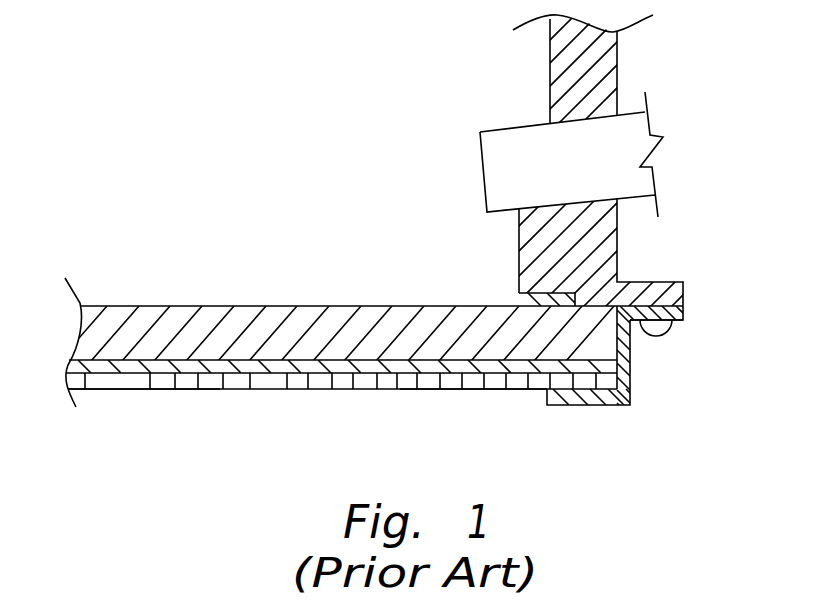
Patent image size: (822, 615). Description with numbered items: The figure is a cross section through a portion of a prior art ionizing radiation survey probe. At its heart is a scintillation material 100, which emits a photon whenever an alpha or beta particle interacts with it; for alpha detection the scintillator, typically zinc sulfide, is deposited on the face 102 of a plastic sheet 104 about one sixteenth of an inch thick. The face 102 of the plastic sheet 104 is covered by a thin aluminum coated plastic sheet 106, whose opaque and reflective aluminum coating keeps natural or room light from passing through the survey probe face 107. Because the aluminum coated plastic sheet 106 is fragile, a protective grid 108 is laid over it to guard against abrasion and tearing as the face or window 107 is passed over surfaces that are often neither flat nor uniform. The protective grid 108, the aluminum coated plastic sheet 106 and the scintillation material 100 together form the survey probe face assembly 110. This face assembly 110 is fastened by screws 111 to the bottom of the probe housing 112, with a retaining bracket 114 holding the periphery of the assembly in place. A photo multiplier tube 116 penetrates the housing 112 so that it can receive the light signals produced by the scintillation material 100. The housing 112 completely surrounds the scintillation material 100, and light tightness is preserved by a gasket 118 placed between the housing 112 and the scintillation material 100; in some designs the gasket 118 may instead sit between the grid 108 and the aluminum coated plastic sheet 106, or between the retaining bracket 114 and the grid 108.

The scintillation material 100 is at (300, 297).
The face 102 is at (253, 362).
The plastic sheet 104 is at (132, 305).
The aluminum coated plastic sheet 106 is at (309, 375).
The survey probe face 107 is at (448, 426).
The protective grid 108 is at (372, 389).
The survey probe face assembly 110 is at (141, 408).
The screws 111 is at (668, 332).
The probe housing 112 is at (645, 254).
The retaining bracket 114 is at (629, 368).
The photo multiplier tube 116 is at (500, 128).
The gasket 118 is at (518, 302).